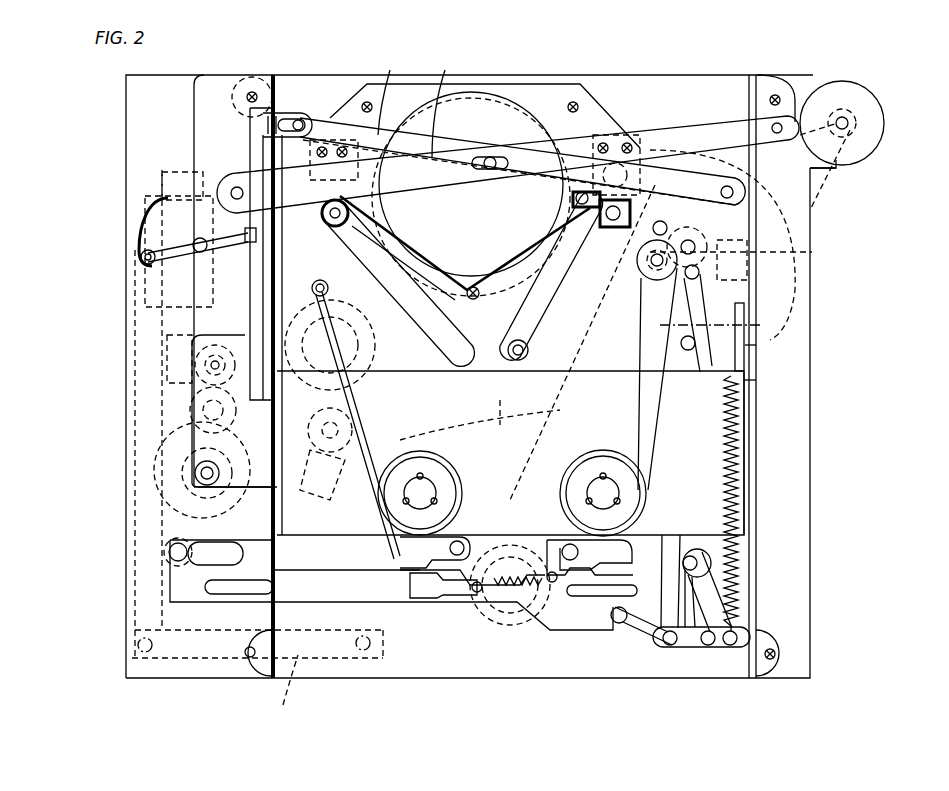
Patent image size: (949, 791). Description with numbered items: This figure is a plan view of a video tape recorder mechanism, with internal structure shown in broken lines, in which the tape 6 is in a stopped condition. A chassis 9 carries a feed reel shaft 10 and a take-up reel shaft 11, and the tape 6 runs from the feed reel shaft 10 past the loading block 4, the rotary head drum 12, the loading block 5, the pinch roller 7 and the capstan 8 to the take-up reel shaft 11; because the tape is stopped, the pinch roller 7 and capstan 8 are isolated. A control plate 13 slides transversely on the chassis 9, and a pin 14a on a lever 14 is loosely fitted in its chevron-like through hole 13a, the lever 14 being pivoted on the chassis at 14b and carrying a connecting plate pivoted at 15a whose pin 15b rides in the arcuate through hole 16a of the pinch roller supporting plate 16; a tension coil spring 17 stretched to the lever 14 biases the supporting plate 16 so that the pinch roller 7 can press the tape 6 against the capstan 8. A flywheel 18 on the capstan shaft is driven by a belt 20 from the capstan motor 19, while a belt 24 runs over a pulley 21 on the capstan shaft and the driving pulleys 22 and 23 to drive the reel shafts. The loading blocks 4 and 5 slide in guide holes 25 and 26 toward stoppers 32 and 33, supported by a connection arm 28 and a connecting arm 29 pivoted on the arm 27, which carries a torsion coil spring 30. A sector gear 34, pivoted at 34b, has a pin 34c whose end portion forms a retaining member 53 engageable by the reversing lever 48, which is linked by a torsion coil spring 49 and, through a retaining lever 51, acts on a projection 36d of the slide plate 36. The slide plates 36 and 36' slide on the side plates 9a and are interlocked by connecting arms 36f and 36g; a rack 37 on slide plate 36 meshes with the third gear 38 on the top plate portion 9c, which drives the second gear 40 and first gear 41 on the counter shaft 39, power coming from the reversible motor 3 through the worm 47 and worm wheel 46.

The reversible motor 3 is at (178, 172).
The loading block 4 is at (305, 168).
The loading block 5 is at (630, 135).
The tape 6 is at (748, 330).
The pinch roller 7 is at (655, 240).
The capstan 8 is at (706, 260).
The chassis 9 is at (795, 468).
The side plate 9a is at (262, 655).
The top plate portion 9c is at (205, 130).
The feed reel shaft 10 is at (400, 537).
The take-up reel shaft 11 is at (600, 600).
The rotary head drum 12 is at (480, 93).
The control plate 13 is at (320, 595).
The chevron-like through hole 13a is at (568, 625).
The lever 14 is at (705, 648).
The pin 14a is at (622, 625).
The pivot 14b is at (730, 648).
The pivot 15a is at (670, 645).
The pin 15b is at (748, 383).
The pinch roller supporting plate 16 is at (748, 312).
The arcuate through hole 16a is at (748, 350).
The tension coil spring 17 is at (742, 560).
The flywheel 18 is at (826, 172).
The capstan motor 19 is at (875, 120).
The belt 20 is at (822, 208).
The pulley 21 is at (812, 253).
The driving pulley 22 is at (512, 620).
The driving pulley 23 is at (746, 487).
The belt 24 is at (600, 470).
The guide hole 25 is at (395, 270).
The guide hole 26 is at (550, 255).
The arm 27 is at (470, 287).
The connection arm 28 is at (330, 290).
The connecting arm 29 is at (636, 268).
The torsion coil spring 30 is at (530, 335).
The stopper 32 is at (320, 140).
The stopper 33 is at (580, 84).
The sector gear 34 is at (505, 410).
The pivot 34b is at (458, 478).
The pin 34c is at (366, 365).
The slide plate 36 is at (164, 546).
The slide plate 36' is at (800, 453).
The projection 36d is at (190, 248).
The connecting arm 36f is at (392, 93).
The connecting arm 36g is at (449, 105).
The rack 37 is at (252, 321).
The third gear for moving the cassette holder 38 is at (195, 427).
The counter shaft 39 is at (205, 473).
The second gear for moving the cassette holder 40 is at (192, 457).
The first gear for moving the cassette holder 41 is at (180, 505).
The worm wheel 46 is at (180, 380).
The worm 47 is at (165, 348).
The reversing lever 48 is at (284, 692).
The torsion coil spring 49 is at (385, 500).
The retaining lever 51 is at (150, 248).
The retaining member 53 is at (334, 450).